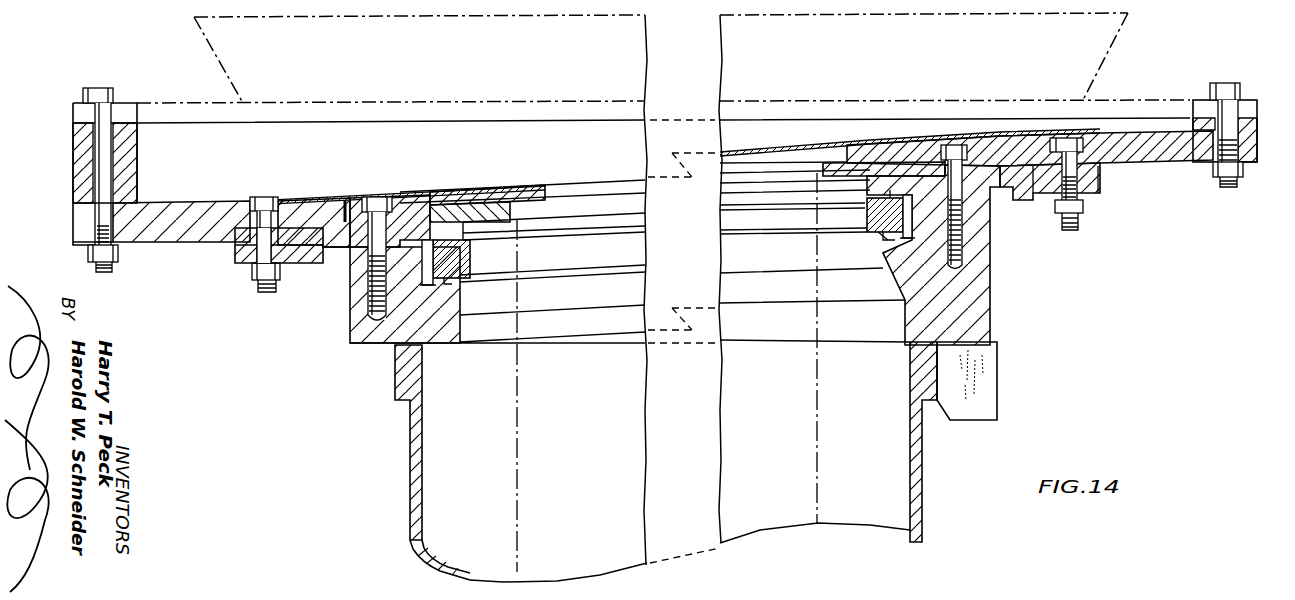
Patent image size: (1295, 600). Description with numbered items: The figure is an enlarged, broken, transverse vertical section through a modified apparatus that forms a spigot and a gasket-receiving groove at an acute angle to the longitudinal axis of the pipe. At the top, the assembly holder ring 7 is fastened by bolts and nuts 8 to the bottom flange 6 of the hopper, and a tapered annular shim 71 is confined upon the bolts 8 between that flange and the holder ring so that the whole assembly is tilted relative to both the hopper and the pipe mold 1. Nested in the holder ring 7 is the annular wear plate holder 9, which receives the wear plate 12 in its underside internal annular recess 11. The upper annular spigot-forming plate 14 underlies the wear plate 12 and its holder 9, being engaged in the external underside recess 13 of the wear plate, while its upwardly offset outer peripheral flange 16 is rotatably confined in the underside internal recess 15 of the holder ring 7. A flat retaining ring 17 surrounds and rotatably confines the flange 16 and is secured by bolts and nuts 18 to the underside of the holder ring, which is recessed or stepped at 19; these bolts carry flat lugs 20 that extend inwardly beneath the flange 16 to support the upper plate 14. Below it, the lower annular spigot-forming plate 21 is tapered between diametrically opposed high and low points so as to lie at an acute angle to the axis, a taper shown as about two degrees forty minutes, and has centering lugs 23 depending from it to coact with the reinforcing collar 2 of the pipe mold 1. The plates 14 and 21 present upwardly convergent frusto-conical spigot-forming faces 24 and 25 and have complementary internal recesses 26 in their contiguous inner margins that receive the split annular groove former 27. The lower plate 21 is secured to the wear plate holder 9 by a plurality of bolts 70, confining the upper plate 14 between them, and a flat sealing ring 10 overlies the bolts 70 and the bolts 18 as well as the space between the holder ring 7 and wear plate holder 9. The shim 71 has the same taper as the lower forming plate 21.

The pipe mold 1 is at (920, 477).
The reinforcing collar 2 is at (397, 378).
The bottom flange 6 is at (195, 100).
The assembly holder ring 7 is at (160, 243).
The bolts and nuts 8 is at (1240, 95).
The annular wear plate holder 9 is at (850, 147).
The flat sealing ring 10 is at (253, 197).
The internal annular recess 11 is at (478, 195).
The wear plate 12 is at (510, 212).
The external underside recess 13 is at (910, 143).
The upper spigot-forming plate 14 is at (990, 218).
The underside internal recess 15 is at (322, 215).
The outer peripheral flange 16 is at (325, 198).
The flat retaining ring 17 is at (1100, 177).
The bolts and nuts 18 is at (1082, 215).
The recess or step 19 is at (236, 262).
The flat lugs 20 is at (292, 272).
The lower spigot-forming plate 21 is at (348, 313).
The centering lugs 23 is at (997, 373).
The spigot-forming face 24 is at (463, 238).
The spigot-forming face 25 is at (461, 303).
The internal recesses 26 is at (430, 240).
The groove former 27 is at (867, 210).
The bolts 70 is at (990, 253).
The tapered annular shim 71 is at (72, 155).